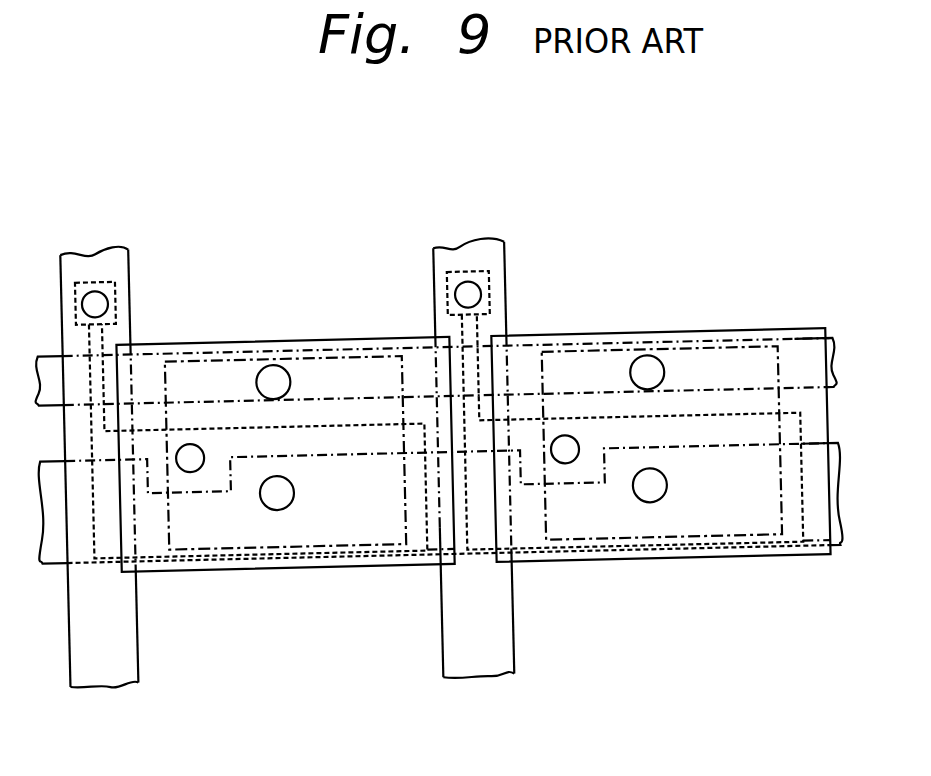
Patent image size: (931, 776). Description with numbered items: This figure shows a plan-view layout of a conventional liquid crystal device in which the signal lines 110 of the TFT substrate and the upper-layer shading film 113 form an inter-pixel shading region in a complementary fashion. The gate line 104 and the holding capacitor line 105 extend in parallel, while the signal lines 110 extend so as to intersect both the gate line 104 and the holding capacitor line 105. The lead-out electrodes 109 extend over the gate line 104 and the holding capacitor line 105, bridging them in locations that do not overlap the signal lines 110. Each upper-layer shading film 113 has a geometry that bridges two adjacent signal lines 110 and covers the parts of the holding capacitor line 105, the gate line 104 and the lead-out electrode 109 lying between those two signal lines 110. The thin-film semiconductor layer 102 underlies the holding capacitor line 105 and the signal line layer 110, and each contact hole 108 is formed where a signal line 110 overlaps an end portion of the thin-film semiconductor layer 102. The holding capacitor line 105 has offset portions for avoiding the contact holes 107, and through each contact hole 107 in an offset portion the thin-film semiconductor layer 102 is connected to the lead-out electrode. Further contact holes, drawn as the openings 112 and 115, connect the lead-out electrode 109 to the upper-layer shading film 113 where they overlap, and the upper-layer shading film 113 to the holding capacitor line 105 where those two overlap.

The thin-film semiconductor layer 102 is at (84, 274).
The gate line 104 is at (49, 358).
The holding capacitor line 105 is at (51, 539).
The contact hole 107 is at (196, 464).
The contact hole 108 is at (102, 295).
The lead-out electrode 109 is at (363, 408).
The signal line 110 is at (103, 655).
The via hole 112 is at (275, 369).
The upper-layer shading film 113 is at (430, 560).
The via hole 115 is at (271, 496).